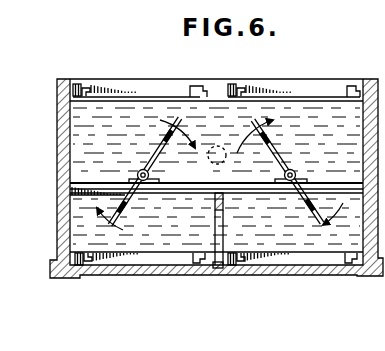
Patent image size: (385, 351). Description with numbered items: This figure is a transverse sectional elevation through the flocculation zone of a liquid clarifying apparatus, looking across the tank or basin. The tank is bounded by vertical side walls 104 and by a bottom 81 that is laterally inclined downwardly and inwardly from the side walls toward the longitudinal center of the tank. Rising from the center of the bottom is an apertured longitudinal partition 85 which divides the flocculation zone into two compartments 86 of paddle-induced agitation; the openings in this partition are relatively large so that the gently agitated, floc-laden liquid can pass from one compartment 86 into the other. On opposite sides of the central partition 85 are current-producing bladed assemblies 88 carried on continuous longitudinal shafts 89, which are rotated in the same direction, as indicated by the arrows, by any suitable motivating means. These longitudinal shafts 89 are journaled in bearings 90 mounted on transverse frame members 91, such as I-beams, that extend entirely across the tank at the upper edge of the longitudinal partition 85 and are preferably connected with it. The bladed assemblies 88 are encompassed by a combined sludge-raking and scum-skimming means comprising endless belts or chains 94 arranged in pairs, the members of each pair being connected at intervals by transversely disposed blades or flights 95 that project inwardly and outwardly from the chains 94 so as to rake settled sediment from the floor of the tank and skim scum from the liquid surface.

The vertical side walls 104 is at (57, 220).
The blades or flights 95 is at (143, 93).
The endless belts or chains 94 is at (352, 89).
The transverse frame members 91 is at (80, 185).
The bearings 90 is at (153, 174).
The current-producing bladed assemblies 88 is at (272, 152).
The longitudinal shafts 89 is at (297, 178).
The longitudinal partition 85 is at (221, 208).
The bottom 81 is at (218, 276).
The compartments 86 is at (183, 214).